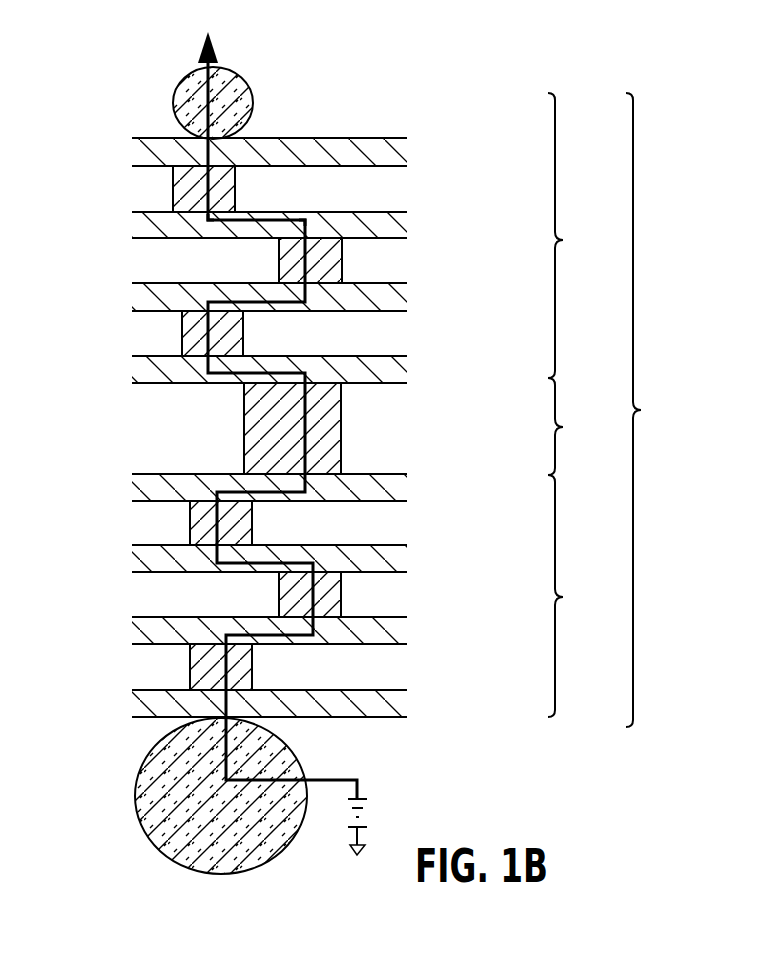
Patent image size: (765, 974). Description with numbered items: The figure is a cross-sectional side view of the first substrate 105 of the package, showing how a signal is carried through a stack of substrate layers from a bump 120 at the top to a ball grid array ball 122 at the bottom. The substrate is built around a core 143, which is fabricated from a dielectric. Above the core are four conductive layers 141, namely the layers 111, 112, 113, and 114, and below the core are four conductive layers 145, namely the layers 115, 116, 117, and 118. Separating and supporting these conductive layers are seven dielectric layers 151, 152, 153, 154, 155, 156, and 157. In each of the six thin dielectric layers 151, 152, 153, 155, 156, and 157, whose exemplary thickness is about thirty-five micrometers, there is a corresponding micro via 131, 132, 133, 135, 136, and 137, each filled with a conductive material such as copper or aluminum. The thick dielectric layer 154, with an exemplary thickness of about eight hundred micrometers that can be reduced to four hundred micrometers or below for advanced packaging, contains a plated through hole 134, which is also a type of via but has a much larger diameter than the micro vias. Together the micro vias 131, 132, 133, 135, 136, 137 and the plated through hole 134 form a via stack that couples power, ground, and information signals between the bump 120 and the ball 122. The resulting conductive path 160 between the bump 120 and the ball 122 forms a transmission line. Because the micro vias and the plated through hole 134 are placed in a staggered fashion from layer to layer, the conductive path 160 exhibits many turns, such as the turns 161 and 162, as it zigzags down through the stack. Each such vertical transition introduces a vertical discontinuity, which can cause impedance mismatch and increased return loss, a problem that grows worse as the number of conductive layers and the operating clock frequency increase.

The first substrate 105 is at (662, 410).
The conductive layer 111 is at (407, 147).
The conductive layer 112 is at (407, 220).
The conductive layer 113 is at (407, 290).
The conductive layer 114 is at (407, 363).
The conductive layer 115 is at (407, 482).
The conductive layer 116 is at (407, 553).
The conductive layer 117 is at (407, 627).
The conductive layer 118 is at (407, 701).
The bump 120 is at (243, 118).
The ball grid array (BGA) ball 122 is at (293, 758).
The micro via 131 is at (230, 190).
The micro via 132 is at (340, 262).
The micro via 133 is at (240, 333).
The plated through hole (PTH) 134 is at (340, 418).
The micro via 135 is at (250, 523).
The micro via 136 is at (340, 593).
The micro via 137 is at (250, 668).
The four conductive layers above core 141 is at (582, 235).
The core 143 is at (583, 426).
The four conductive layers below core 145 is at (583, 596).
The dielectric layer 151 is at (143, 191).
The dielectric layer 152 is at (143, 261).
The dielectric layer 153 is at (143, 331).
The dielectric layer 154 is at (147, 424).
The dielectric layer 155 is at (147, 516).
The dielectric layer 156 is at (147, 593).
The dielectric layer 157 is at (147, 668).
The conductive path 160 is at (220, 89).
The turn 161 is at (208, 227).
The turn 162 is at (311, 210).